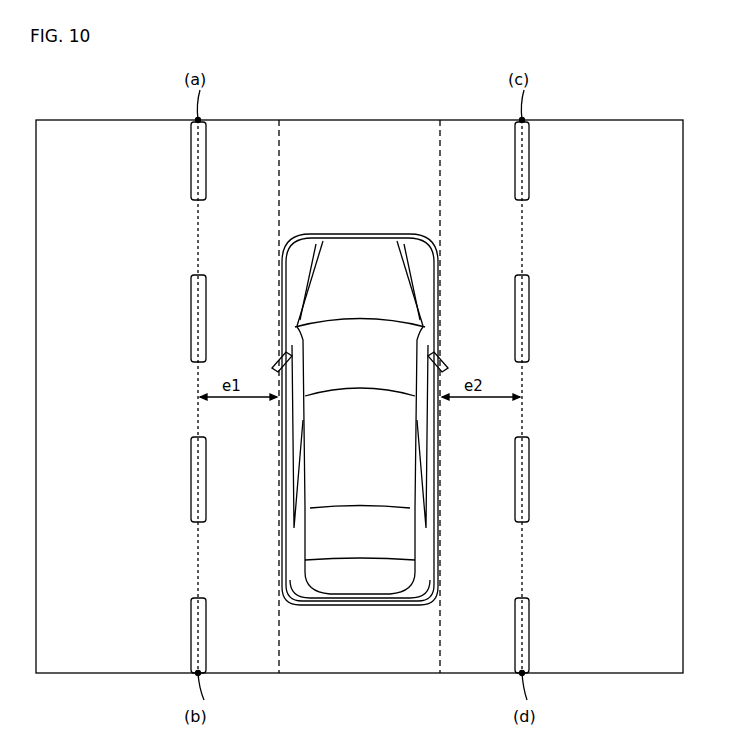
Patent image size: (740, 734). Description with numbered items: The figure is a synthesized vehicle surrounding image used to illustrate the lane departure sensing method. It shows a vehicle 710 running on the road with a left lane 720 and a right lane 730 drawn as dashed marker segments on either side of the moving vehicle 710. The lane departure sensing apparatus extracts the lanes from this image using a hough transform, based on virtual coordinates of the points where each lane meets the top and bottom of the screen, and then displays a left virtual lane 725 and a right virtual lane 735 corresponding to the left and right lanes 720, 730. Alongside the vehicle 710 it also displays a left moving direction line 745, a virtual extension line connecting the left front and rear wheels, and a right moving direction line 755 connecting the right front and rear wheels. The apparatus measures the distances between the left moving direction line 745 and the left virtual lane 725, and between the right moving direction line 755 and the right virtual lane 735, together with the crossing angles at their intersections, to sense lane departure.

The vehicle 710 is at (357, 234).
The left lane 720 is at (190, 330).
The left virtual lane 725 is at (197, 220).
The right lane 730 is at (529, 319).
The right virtual lane 735 is at (523, 218).
The left moving direction line 745 is at (281, 130).
The right moving direction line 755 is at (440, 132).